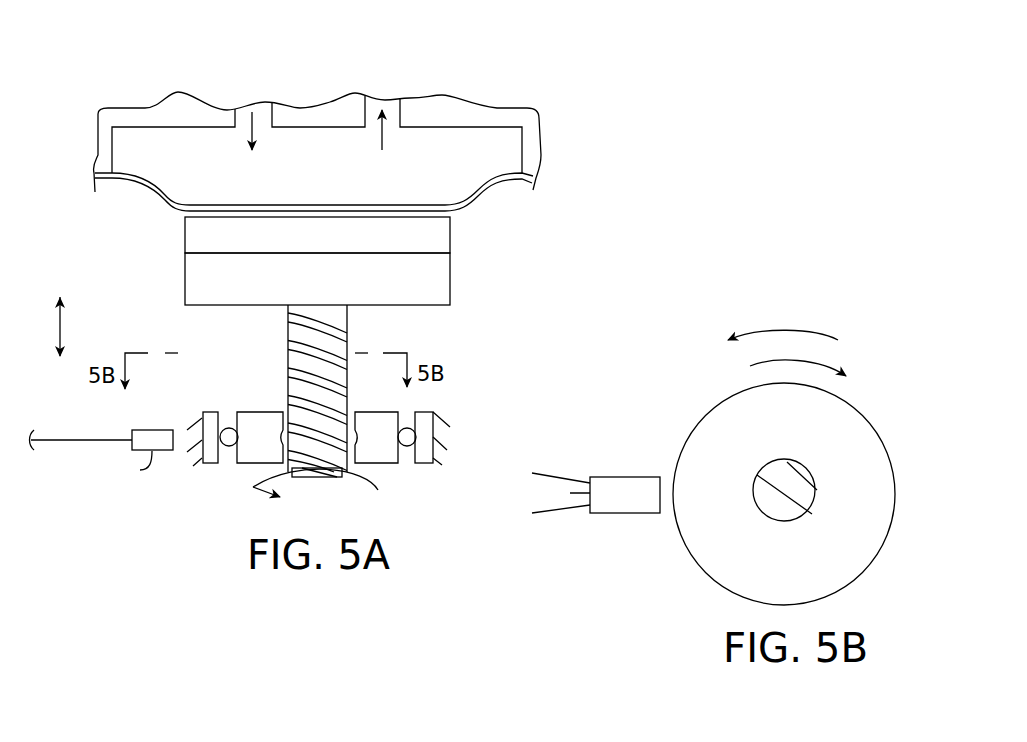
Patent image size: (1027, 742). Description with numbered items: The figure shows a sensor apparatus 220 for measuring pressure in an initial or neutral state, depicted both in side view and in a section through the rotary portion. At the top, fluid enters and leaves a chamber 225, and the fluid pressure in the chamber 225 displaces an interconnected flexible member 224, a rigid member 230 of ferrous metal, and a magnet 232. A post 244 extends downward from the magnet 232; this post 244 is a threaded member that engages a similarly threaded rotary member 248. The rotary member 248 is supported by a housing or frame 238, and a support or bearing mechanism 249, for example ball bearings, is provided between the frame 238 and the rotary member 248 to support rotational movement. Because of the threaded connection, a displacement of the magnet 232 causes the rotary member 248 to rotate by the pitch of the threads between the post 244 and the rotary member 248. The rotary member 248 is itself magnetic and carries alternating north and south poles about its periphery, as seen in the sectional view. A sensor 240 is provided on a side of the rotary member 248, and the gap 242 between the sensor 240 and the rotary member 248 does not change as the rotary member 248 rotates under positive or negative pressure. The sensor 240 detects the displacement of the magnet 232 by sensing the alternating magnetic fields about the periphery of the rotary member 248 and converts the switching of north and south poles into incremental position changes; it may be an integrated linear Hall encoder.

In FIG. 5A, the sensor apparatus 220 is at (118, 82).
In FIG. 5A, the flexible member 224 is at (510, 184).
In FIG. 5A, the chamber 225 is at (530, 148).
In FIG. 5A, the rigid member 230 is at (195, 237).
In FIG. 5A, the magnet 232 is at (197, 278).
In FIG. 5A, the housing or frame 238 is at (421, 466).
In FIG. 5A, the sensor 240 is at (131, 431).
In FIG. 5B, the sensor 240 is at (617, 514).
In FIG. 5A, the gap 242 is at (187, 477).
In FIG. 5A, the post 244 is at (345, 340).
In FIG. 5A, the rotary member 248 is at (382, 456).
In FIG. 5B, the rotary member 248 is at (712, 576).
In FIG. 5A, the support or bearing mechanism 249 is at (418, 437).